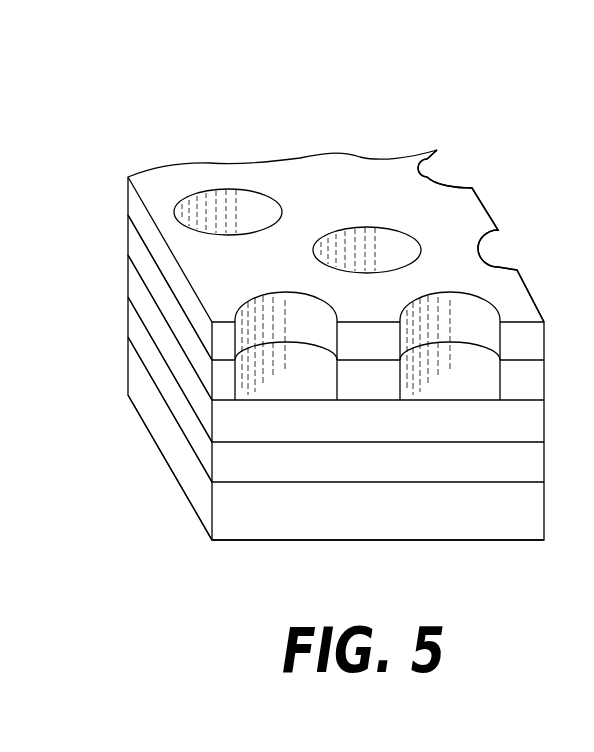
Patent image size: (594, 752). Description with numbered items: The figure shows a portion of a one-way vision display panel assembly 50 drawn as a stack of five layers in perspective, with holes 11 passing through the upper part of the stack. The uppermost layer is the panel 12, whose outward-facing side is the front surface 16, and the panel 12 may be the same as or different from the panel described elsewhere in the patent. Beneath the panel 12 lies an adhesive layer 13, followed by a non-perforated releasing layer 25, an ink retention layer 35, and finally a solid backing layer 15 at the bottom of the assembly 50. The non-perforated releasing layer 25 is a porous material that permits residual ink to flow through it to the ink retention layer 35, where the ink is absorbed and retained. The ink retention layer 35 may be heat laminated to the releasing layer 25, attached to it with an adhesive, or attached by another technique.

The one-way vision display panel assembly 50 is at (504, 110).
The hole 11 is at (240, 191).
The panel 12 is at (129, 196).
The adhesive layer 13 is at (129, 238).
The non-perforated releasing layer 25 is at (129, 278).
The ink retention layer 35 is at (129, 317).
The solid backing layer 15 is at (129, 370).
The front surface 16 is at (470, 208).